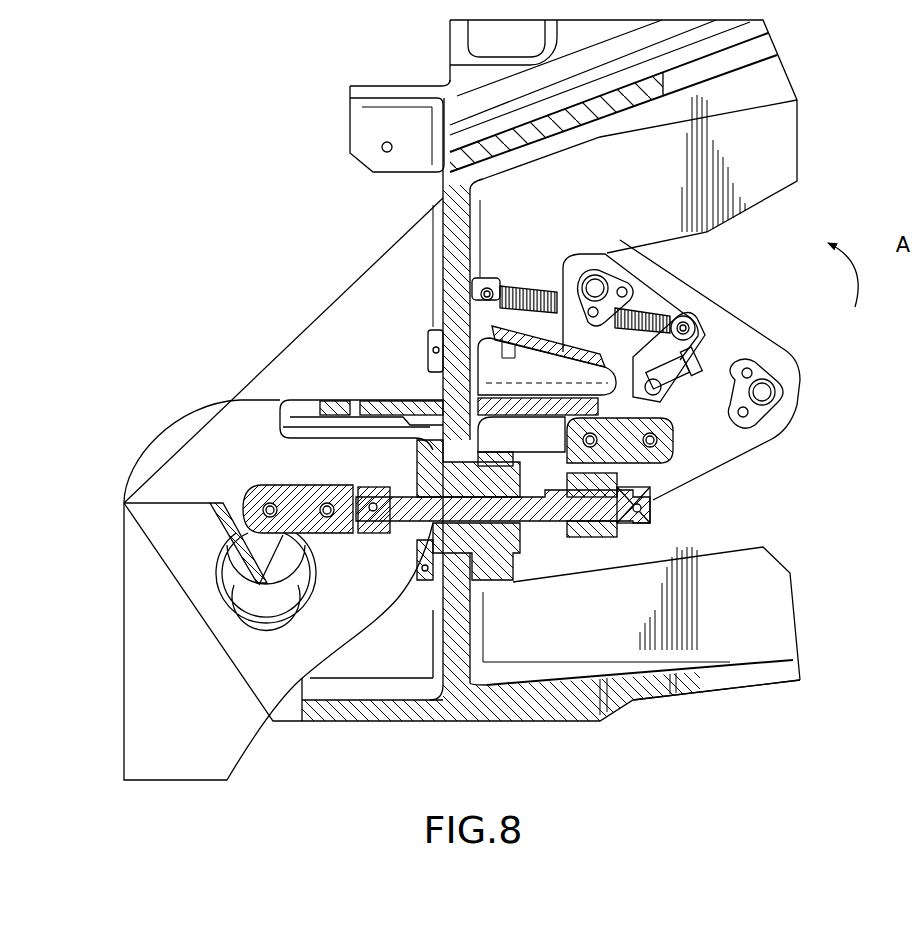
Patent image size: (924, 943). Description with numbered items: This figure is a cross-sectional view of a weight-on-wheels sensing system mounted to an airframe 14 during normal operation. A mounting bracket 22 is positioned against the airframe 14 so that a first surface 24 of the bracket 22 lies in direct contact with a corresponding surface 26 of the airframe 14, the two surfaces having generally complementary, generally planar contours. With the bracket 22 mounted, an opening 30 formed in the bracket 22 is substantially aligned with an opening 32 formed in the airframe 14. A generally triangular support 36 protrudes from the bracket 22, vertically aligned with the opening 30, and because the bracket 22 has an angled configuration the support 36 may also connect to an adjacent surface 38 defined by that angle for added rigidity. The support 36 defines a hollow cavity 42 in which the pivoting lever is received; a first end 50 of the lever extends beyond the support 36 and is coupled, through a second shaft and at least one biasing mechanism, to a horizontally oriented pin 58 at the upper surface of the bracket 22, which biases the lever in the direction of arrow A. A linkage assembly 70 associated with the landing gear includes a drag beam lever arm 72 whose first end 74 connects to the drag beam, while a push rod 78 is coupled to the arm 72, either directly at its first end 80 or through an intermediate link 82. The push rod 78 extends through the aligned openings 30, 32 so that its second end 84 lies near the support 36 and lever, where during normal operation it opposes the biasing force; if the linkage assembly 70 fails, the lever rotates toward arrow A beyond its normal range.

The airframe 14 is at (450, 250).
The mounting bracket 22 is at (468, 311).
The first surface 24 is at (443, 400).
The surface 26 is at (473, 222).
The opening 30 is at (503, 553).
The opening 32 is at (433, 560).
The support 36 is at (572, 352).
The adjacent surface 38 is at (730, 430).
The hollow cavity 42 is at (630, 367).
The first end 50 is at (695, 318).
The pin 58 is at (692, 340).
The linkage assembly 70 is at (393, 474).
The drag beam lever arm 72 is at (243, 505).
The first end 74 is at (243, 535).
The push rod 78 is at (440, 521).
The first end 80 is at (393, 515).
The intermediate link 82 is at (296, 494).
The second end 84 is at (648, 533).